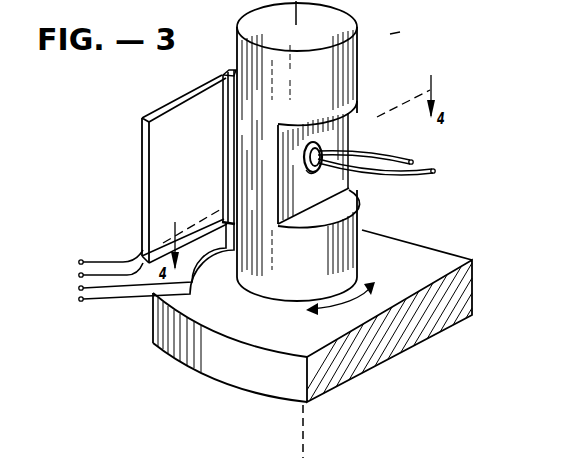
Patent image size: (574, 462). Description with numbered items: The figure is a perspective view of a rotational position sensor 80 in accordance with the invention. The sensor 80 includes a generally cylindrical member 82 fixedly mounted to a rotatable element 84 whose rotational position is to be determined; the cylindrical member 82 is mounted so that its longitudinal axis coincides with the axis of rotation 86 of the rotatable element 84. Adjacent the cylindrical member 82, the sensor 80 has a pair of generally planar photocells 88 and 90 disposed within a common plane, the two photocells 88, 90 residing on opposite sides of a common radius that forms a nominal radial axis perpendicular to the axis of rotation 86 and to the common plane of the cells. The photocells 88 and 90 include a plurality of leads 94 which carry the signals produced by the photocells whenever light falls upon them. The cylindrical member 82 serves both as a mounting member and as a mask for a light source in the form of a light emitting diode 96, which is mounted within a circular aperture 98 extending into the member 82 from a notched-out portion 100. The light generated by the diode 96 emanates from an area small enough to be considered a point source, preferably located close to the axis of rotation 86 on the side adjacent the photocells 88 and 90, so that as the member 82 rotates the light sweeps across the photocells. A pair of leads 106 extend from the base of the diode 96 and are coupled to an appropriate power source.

The sensor 80 is at (398, 34).
The cylindrical member 82 is at (337, 15).
The rotatable element 84 is at (208, 369).
The axis of rotation 86 is at (308, 425).
The photocell 88 is at (150, 112).
The photocell 90 is at (229, 66).
The leads 94 is at (76, 265).
The light emitting diode 96 is at (327, 144).
The circular aperture 98 is at (311, 175).
The notched-out portion 100 is at (343, 202).
The leads 106 is at (393, 163).